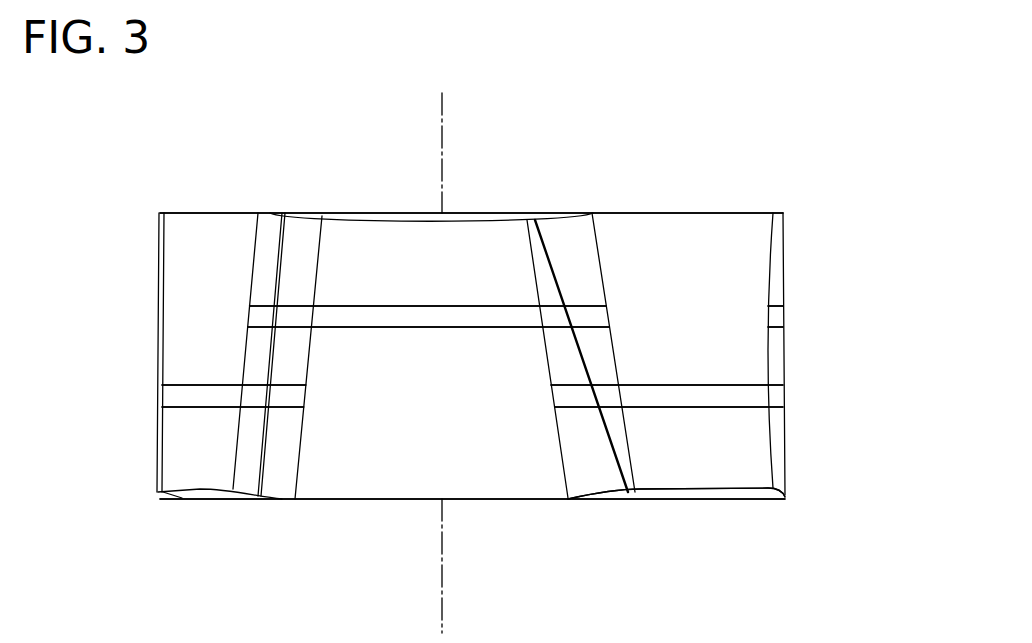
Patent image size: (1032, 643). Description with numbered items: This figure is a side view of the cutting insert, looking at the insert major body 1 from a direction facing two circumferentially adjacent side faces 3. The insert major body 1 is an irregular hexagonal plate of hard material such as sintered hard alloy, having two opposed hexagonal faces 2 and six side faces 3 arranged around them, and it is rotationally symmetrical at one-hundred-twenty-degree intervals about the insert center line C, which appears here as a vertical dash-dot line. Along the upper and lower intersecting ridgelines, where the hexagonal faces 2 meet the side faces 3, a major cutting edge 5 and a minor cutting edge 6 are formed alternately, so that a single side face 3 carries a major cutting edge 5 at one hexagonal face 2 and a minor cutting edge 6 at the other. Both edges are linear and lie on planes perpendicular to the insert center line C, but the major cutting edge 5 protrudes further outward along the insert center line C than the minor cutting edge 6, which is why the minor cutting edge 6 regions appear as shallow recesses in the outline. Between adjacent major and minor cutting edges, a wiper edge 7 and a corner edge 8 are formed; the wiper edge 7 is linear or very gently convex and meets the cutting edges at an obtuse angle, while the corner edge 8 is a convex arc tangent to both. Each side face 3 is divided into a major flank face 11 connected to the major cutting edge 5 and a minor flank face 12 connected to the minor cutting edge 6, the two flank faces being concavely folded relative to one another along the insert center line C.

The insert major body 1 is at (757, 137).
The hexagonal face 2 is at (615, 184).
The side face 3 is at (68, 308).
The major cutting edge 5 is at (210, 212).
The minor cutting edge 6 is at (470, 218).
The wiper edge 7 is at (157, 212).
The corner edge 8 is at (300, 216).
The major flank face 11 is at (193, 288).
The minor flank face 12 is at (183, 442).
The insert center line C is at (445, 112).